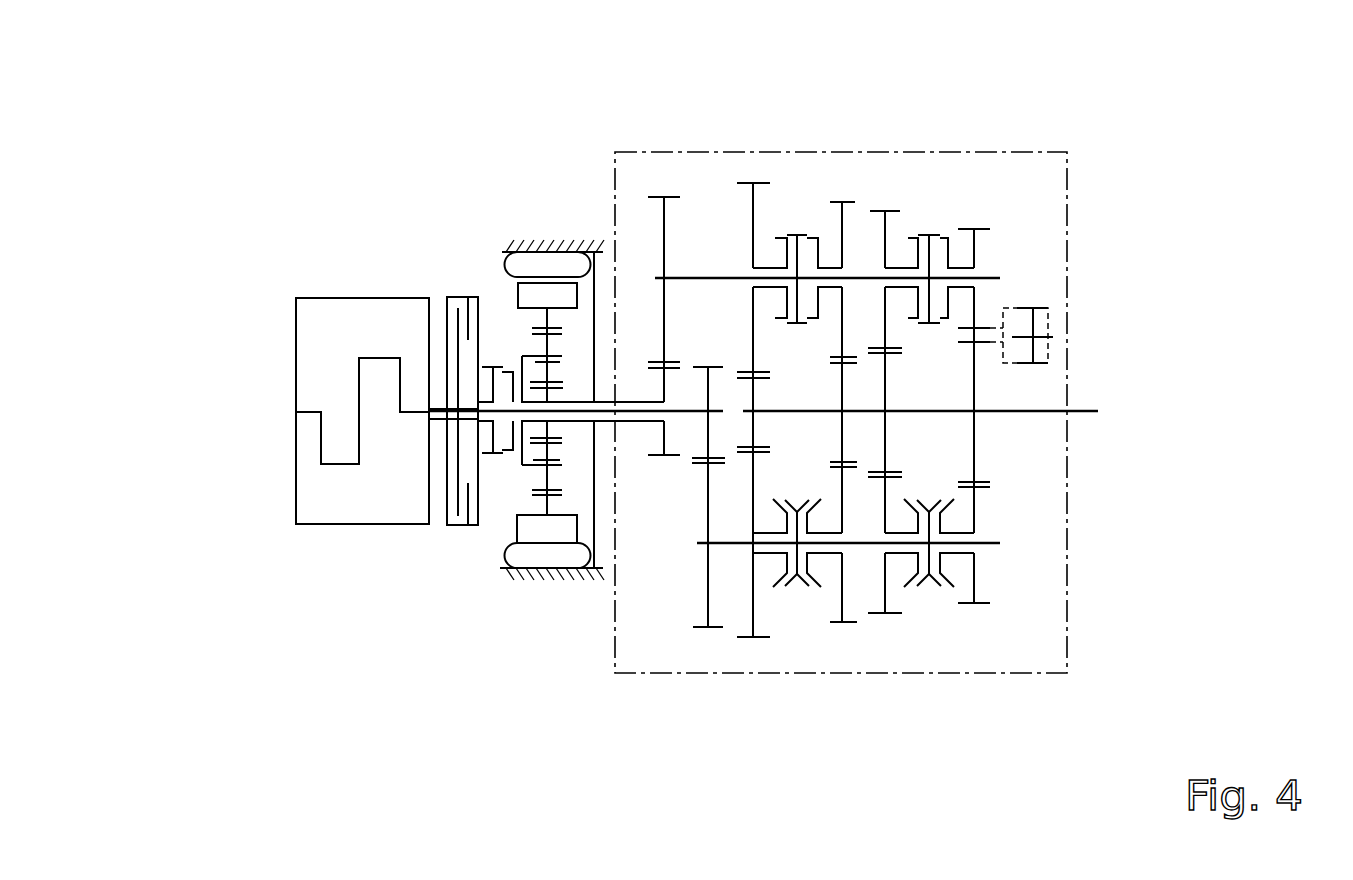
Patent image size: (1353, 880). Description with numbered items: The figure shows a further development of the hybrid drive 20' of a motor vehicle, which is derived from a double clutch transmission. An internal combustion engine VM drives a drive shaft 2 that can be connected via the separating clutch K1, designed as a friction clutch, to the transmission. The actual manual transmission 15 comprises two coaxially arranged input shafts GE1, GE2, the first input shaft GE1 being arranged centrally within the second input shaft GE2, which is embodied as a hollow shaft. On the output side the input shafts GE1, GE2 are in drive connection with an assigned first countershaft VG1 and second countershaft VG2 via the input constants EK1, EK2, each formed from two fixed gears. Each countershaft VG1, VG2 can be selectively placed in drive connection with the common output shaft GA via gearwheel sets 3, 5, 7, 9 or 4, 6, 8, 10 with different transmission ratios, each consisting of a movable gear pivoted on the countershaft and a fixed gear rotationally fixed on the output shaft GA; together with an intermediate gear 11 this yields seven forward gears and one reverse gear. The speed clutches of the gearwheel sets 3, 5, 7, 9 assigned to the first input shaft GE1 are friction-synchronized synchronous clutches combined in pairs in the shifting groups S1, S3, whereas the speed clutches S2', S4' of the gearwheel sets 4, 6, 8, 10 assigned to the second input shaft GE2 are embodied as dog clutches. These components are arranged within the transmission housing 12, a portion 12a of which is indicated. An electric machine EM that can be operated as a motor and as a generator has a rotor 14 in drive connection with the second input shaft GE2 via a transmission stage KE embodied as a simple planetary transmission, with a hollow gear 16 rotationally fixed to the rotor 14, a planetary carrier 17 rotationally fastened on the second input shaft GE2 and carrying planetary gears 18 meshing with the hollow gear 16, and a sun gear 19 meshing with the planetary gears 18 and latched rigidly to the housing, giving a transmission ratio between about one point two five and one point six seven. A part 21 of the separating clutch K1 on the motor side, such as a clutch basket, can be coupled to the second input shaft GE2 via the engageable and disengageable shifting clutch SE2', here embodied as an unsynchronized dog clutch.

The internal combustion engine VM is at (365, 312).
The drive shaft 2 is at (443, 303).
The separating clutch K1 is at (457, 286).
The shifting clutch SE2' is at (490, 245).
The electric machine EM is at (547, 216).
The second input shaft GE2 is at (602, 407).
The first input shaft GE1 is at (635, 413).
The input constant EK2 is at (664, 186).
The input constant EK1 is at (708, 640).
The gearwheel set 10 is at (753, 176).
The gearwheel set 9 is at (753, 646).
The gearwheel set 8 is at (842, 191).
The gearwheel set 7 is at (842, 632).
The gearwheel set 6 is at (885, 199).
The gearwheel set 5 is at (885, 628).
The gearwheel set 4 is at (974, 221).
The gearwheel set 3 is at (974, 613).
The intermediate gear 11 is at (1033, 348).
The transmission housing 12 is at (1067, 565).
The housing wall 12a is at (615, 618).
The manual transmission 15 is at (1080, 236).
The second countershaft VG2 is at (995, 279).
The first countershaft VG1 is at (988, 546).
The output shaft GA is at (1098, 413).
The speed clutch S4' is at (797, 260).
The speed clutch S2' is at (929, 260).
The shifting group S3 is at (797, 527).
The shifting group S1 is at (929, 527).
The part of the separating clutch 21 is at (447, 437).
The transmission stage KE is at (500, 467).
The hybrid drive 20' is at (306, 578).
The planetary carrier 17 is at (538, 476).
The planetary gears 18 is at (520, 450).
The hollow gear 16 is at (538, 473).
The rotor 14 is at (540, 493).
The sun gear 19 is at (606, 422).